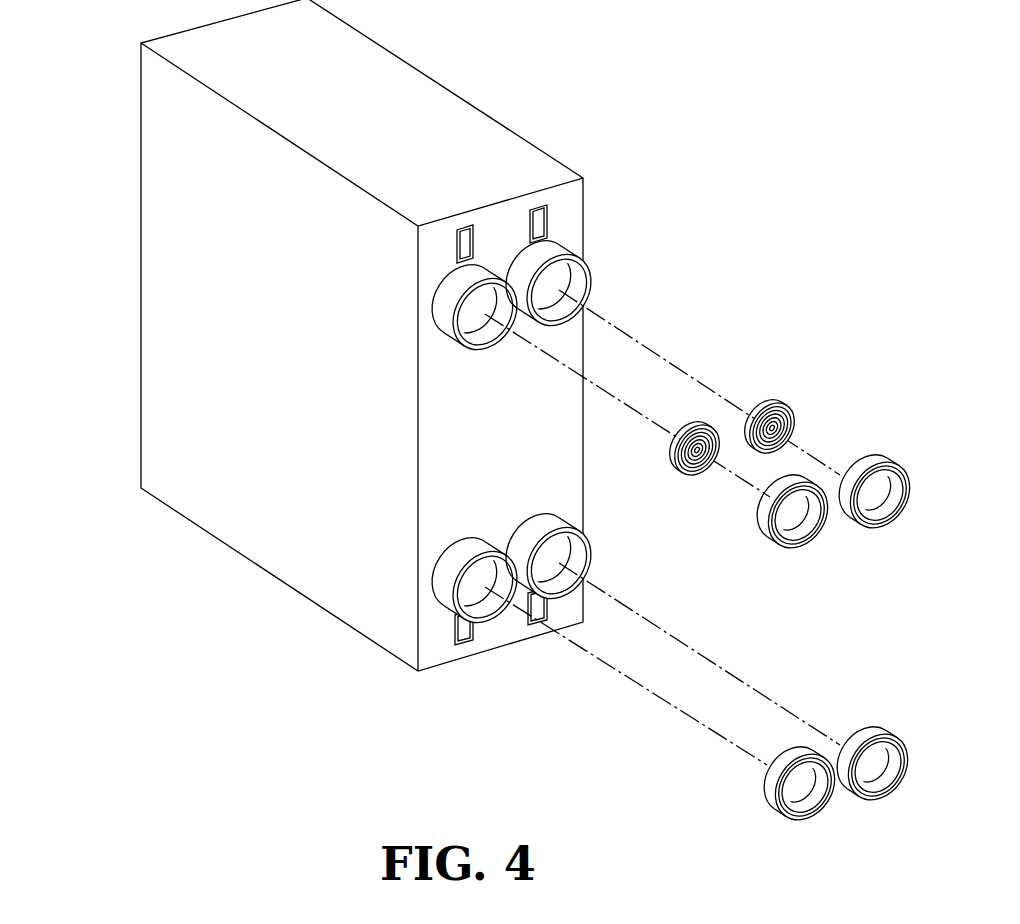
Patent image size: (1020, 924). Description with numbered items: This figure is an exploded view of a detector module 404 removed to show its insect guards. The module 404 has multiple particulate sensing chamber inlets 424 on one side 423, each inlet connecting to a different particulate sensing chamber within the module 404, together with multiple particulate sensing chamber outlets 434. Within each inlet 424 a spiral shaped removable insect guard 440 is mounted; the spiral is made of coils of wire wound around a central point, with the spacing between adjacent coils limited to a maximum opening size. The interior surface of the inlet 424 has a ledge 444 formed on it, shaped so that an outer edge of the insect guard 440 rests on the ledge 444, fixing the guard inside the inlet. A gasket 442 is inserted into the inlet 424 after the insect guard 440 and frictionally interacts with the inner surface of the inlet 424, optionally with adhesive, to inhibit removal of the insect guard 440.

The module 404 is at (141, 123).
The side 423 is at (498, 227).
The particulate sensing chamber inlet 424 is at (374, 277).
The particulate sensing chamber outlet 434 is at (435, 577).
The insect guard 440 is at (684, 471).
The gasket 442 is at (776, 538).
The ledge 444 is at (578, 292).